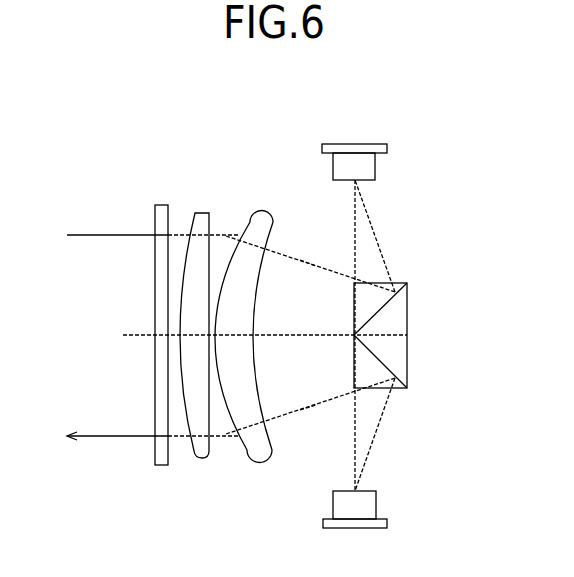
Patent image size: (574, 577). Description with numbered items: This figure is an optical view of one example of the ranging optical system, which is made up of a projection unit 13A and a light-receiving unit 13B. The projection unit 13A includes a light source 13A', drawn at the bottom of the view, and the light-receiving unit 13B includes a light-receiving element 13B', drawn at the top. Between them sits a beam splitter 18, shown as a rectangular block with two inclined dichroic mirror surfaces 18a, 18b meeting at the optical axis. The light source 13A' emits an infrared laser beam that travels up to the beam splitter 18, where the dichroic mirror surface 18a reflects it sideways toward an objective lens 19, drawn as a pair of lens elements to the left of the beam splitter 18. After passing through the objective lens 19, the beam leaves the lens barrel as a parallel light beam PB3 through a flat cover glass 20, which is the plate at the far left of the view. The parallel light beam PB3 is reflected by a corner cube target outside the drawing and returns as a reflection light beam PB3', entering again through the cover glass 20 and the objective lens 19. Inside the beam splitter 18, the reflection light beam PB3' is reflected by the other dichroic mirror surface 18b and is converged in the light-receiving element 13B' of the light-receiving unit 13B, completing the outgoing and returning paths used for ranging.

The cover glass 20 is at (162, 205).
The objective lens 19 is at (280, 471).
The beam splitter 18 is at (406, 316).
The dichroic mirror surface 18a is at (406, 376).
The dichroic mirror surface 18b is at (393, 322).
The projection unit 13A is at (298, 474).
The light-receiving unit 13B is at (285, 206).
The light source 13A' is at (397, 509).
The light-receiving element 13B' is at (401, 162).
The parallel light beam PB3 is at (231, 442).
The reflection light beam PB3' is at (221, 226).